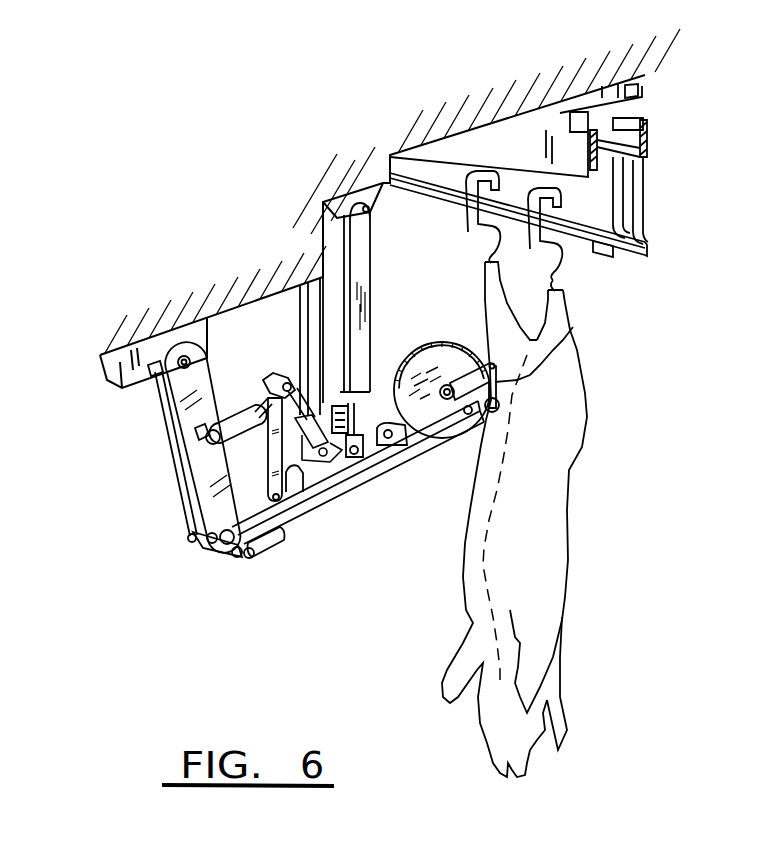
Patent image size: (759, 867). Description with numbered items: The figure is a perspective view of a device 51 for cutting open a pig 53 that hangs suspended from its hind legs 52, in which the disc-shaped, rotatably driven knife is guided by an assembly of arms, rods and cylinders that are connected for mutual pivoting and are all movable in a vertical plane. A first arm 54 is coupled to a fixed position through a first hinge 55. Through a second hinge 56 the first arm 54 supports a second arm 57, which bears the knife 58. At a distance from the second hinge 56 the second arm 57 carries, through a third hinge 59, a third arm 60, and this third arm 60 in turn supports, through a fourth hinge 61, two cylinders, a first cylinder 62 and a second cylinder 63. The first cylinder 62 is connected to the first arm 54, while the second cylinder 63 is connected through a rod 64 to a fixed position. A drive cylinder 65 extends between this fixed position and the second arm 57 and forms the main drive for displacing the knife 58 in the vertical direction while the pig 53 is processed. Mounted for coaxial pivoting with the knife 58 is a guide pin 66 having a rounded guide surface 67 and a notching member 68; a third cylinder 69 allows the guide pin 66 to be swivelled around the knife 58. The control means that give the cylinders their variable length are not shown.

The device 51 is at (188, 541).
The hind legs 52 is at (488, 300).
The pig 53 is at (475, 588).
The first arm 54 is at (202, 463).
The first hinge 55 is at (162, 406).
The second hinge 56 is at (223, 551).
The second arm 57 is at (331, 503).
The knife 58 is at (445, 340).
The third hinge 59 is at (286, 503).
The third arm 60 is at (267, 439).
The fourth hinge 61 is at (287, 379).
The first cylinder 62 is at (244, 403).
The second cylinder 63 is at (365, 385).
The rod 64 is at (312, 325).
The drive cylinder 65 is at (371, 278).
The guide pin 66 is at (541, 370).
The rounded guide surface 67 is at (500, 404).
The notching member 68 is at (485, 410).
The third cylinder 69 is at (278, 544).